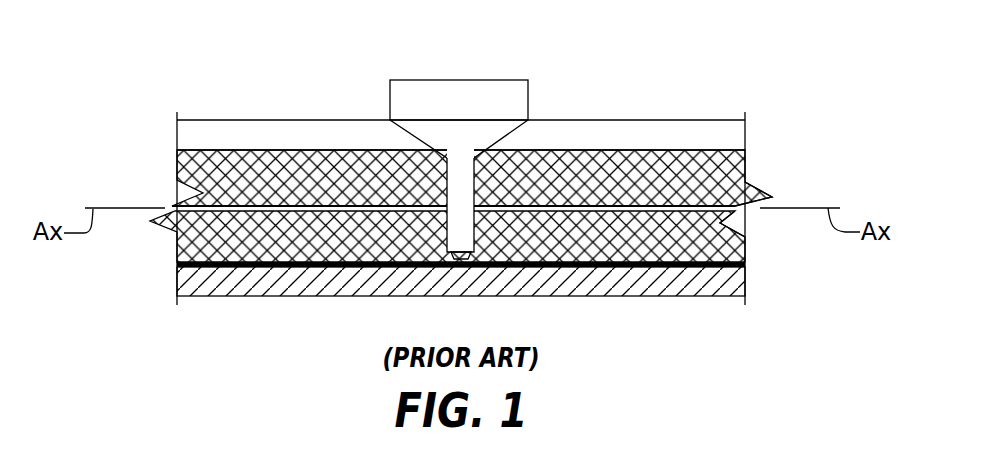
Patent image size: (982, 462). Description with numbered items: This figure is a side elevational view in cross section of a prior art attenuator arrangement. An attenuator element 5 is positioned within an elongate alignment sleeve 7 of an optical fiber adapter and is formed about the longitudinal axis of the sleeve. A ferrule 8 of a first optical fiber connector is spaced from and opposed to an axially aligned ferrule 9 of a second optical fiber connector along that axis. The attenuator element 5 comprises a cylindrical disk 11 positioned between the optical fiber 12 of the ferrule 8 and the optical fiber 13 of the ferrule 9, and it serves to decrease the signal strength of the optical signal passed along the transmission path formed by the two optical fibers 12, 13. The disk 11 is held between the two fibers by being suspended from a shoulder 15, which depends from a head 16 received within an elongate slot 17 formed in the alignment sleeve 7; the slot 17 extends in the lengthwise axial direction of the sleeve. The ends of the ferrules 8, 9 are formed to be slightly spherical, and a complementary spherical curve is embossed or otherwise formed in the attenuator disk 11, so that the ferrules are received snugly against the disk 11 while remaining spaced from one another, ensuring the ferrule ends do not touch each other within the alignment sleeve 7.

The attenuator element 5 is at (500, 130).
The alignment sleeve 7 is at (623, 297).
The ferrule 8 is at (742, 251).
The ferrule 9 is at (180, 258).
The cylindrical disk 11 is at (460, 253).
The optical fiber 12 is at (772, 197).
The optical fiber 13 is at (170, 206).
The shoulder 15 is at (492, 133).
The head 16 is at (507, 97).
The elongate slot 17 is at (697, 133).